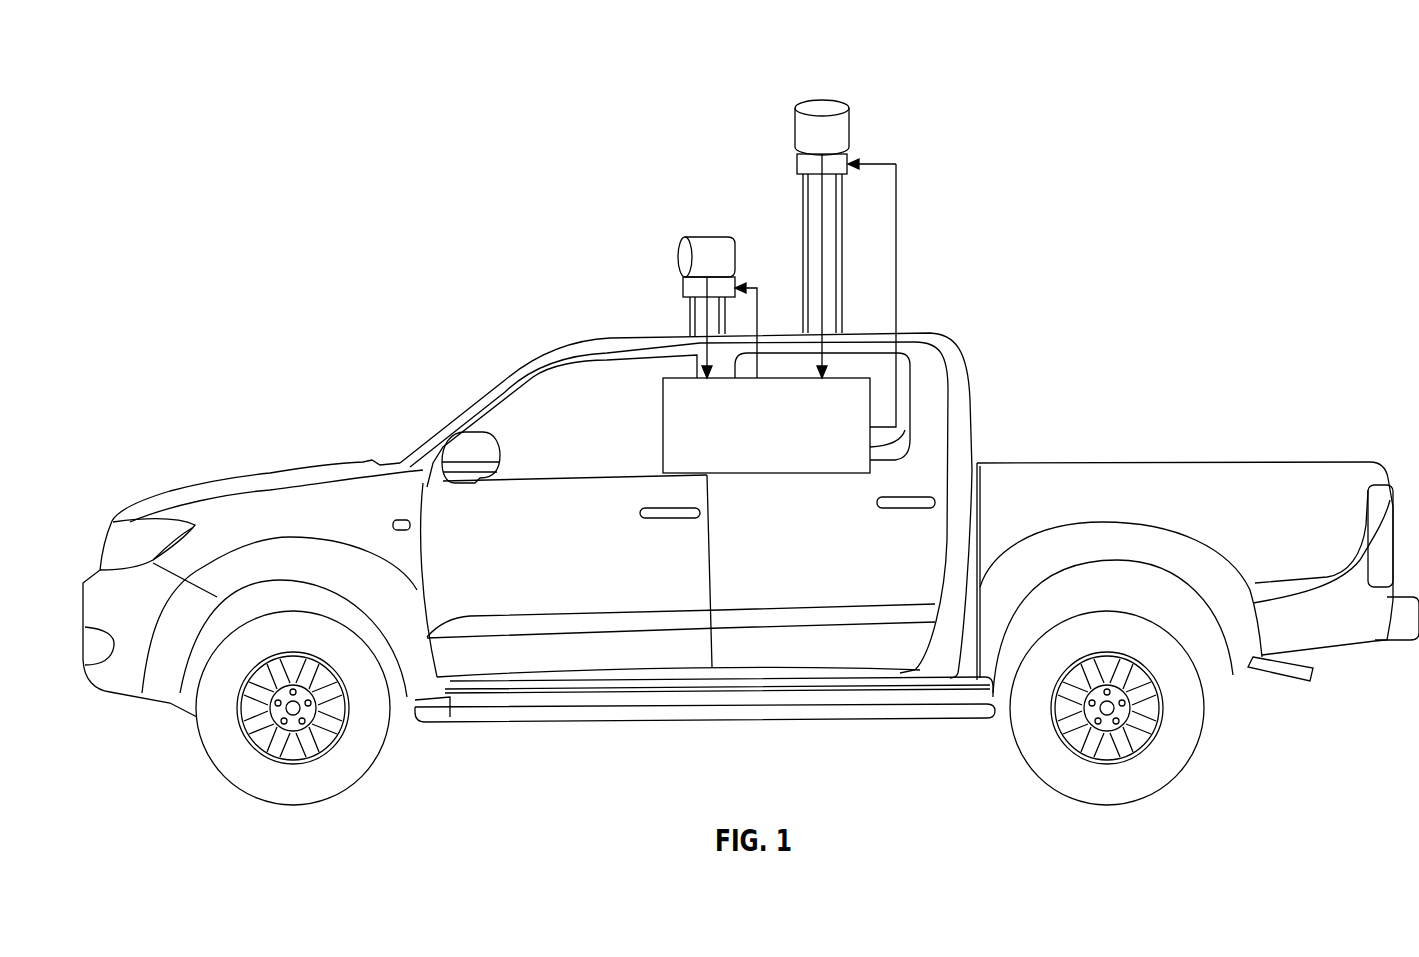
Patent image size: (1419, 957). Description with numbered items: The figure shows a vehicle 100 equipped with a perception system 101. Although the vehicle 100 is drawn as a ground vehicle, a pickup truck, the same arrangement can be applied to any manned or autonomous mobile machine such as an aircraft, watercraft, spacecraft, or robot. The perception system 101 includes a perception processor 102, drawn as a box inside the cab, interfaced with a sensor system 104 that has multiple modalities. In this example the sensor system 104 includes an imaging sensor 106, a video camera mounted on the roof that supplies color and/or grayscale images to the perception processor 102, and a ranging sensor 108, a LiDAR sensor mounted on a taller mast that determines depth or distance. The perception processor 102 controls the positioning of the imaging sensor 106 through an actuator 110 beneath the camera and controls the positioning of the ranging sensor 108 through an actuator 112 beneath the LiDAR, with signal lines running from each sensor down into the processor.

The vehicle 100 is at (800, 582).
The perception system 101 is at (441, 101).
The perception processor 102 is at (900, 443).
The sensor system 104 is at (988, 189).
The imaging sensor 106 is at (688, 240).
The ranging sensor 108 is at (849, 128).
The actuator 110 is at (683, 288).
The actuator 112 is at (797, 165).